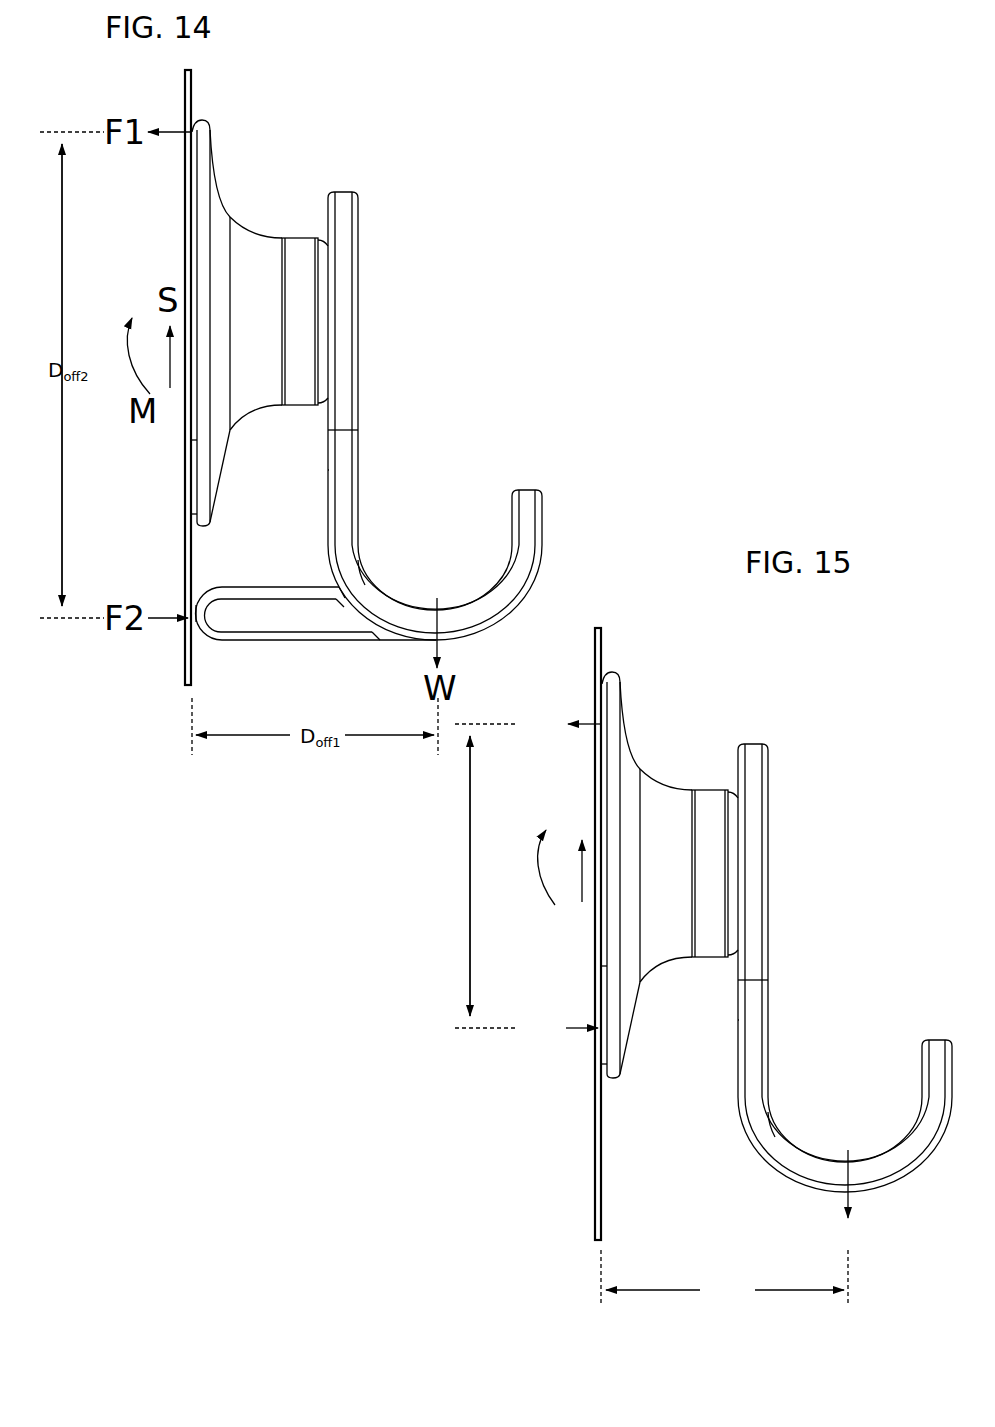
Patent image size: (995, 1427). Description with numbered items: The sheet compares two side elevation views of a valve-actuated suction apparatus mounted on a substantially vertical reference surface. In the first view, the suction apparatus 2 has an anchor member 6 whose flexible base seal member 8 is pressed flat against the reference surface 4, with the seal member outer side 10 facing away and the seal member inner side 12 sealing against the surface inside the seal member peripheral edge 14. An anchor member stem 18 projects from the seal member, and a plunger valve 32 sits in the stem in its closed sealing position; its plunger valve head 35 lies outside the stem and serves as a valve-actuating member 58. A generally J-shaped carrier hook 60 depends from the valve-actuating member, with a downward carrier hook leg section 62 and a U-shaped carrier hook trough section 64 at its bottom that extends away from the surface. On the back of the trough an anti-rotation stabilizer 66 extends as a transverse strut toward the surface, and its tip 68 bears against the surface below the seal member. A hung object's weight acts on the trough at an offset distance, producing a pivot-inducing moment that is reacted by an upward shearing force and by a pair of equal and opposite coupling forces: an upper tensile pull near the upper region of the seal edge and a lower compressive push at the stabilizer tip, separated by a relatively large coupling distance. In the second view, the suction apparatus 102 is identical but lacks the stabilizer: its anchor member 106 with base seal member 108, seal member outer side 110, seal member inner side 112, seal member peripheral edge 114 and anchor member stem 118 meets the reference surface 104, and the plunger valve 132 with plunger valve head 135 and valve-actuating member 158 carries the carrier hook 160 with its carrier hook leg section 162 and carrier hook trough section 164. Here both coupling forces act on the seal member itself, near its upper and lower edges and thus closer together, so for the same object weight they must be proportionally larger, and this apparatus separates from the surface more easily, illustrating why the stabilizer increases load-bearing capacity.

In FIG. 14, the valve-actuated suction apparatus 2 is at (380, 152).
In FIG. 14, the reference surface 4 is at (202, 82).
In FIG. 14, the anchor member 6 is at (199, 324).
In FIG. 14, the base seal member 8 is at (226, 250).
In FIG. 14, the seal member outer side 10 is at (222, 466).
In FIG. 14, the seal member inner side 12 is at (192, 446).
In FIG. 14, the seal member peripheral edge 14 is at (192, 514).
In FIG. 14, the anchor member stem 18 is at (296, 262).
In FIG. 14, the plunger valve 32 is at (378, 223).
In FIG. 14, the plunger valve head 35 is at (362, 260).
In FIG. 14, the valve-actuating member 58 is at (360, 314).
In FIG. 14, the carrier hook 60 is at (450, 494).
In FIG. 14, the carrier hook leg section 62 is at (346, 464).
In FIG. 14, the carrier hook trough section 64 is at (378, 586).
In FIG. 14, the anti-rotation stabilizer 66 is at (262, 612).
In FIG. 14, the tip 68 is at (190, 614).
In FIG. 15, the suction apparatus 102 is at (788, 712).
In FIG. 15, the reference surface 104 is at (612, 640).
In FIG. 15, the anchor member 106 is at (610, 881).
In FIG. 15, the base seal member 108 is at (636, 795).
In FIG. 15, the seal member outer side 110 is at (632, 1022).
In FIG. 15, the seal member inner side 112 is at (602, 962).
In FIG. 15, the seal member peripheral edge 114 is at (604, 1068).
In FIG. 15, the anchor member stem 118 is at (708, 812).
In FIG. 15, the plunger valve 132 is at (788, 775).
In FIG. 15, the plunger valve head 135 is at (774, 810).
In FIG. 15, the valve-actuating member 158 is at (770, 862).
In FIG. 15, the carrier hook 160 is at (860, 1046).
In FIG. 15, the carrier hook leg section 162 is at (755, 1016).
In FIG. 15, the carrier hook trough section 164 is at (788, 1138).